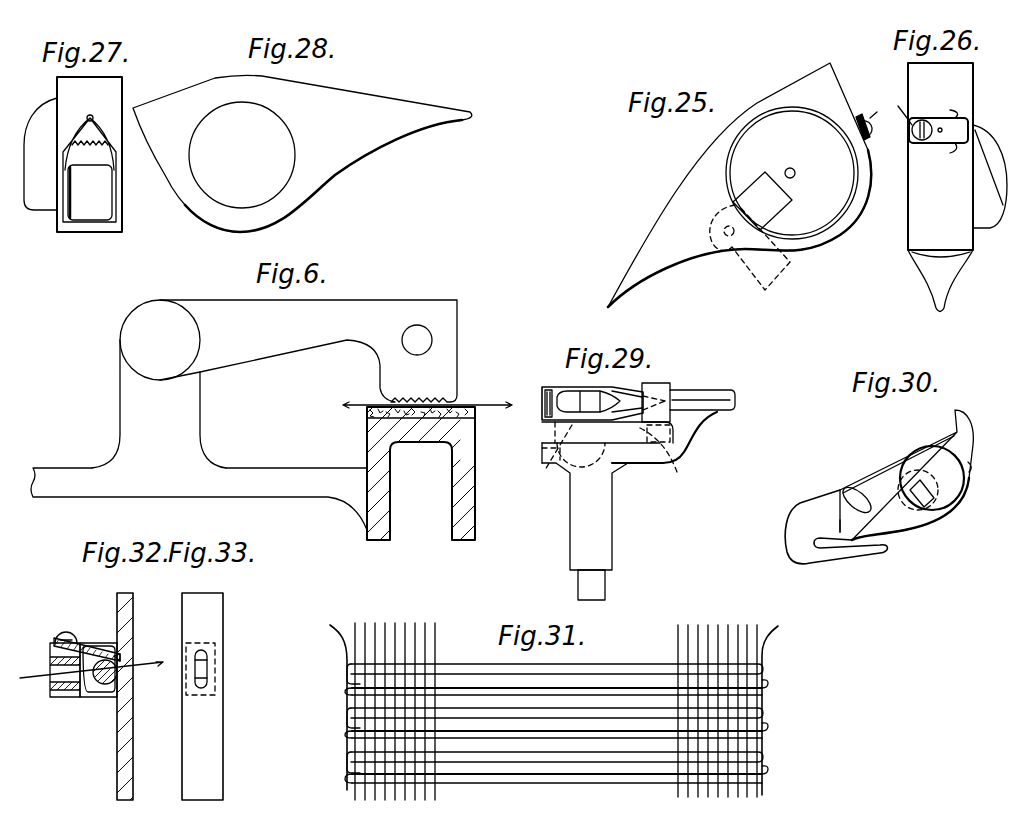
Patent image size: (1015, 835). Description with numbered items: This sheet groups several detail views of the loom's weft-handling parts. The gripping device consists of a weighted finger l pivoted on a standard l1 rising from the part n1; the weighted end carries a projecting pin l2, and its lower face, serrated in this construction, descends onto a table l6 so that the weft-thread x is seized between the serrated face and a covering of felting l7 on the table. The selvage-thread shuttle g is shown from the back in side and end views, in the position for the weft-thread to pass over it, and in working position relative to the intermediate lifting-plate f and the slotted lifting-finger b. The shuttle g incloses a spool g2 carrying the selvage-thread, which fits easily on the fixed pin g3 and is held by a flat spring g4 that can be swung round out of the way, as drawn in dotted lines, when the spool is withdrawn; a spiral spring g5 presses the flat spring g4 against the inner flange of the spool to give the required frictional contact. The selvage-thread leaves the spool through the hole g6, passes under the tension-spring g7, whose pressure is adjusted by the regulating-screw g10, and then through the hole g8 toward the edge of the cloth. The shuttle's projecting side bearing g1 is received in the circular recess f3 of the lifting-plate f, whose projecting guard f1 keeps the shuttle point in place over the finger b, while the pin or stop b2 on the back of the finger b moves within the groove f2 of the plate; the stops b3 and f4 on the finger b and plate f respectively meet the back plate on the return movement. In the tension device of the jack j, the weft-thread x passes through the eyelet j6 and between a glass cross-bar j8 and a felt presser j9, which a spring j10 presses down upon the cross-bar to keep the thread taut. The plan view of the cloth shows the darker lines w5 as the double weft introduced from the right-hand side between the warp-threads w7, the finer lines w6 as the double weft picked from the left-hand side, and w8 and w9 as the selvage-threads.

In FIG. 27, the selvage-thread shuttle g is at (89, 154).
In FIG. 28, the selvage-thread shuttle g is at (302, 153).
In FIG. 25, the selvage-thread shuttle g is at (739, 185).
In FIG. 26, the selvage-thread shuttle g is at (940, 187).
In FIG. 29, the selvage-thread shuttle g is at (590, 401).
In FIG. 30, the selvage-thread shuttle g is at (906, 475).
In FIG. 27, the projecting side bearing g1 is at (40, 154).
In FIG. 28, the projecting side bearing g1 is at (242, 155).
In FIG. 26, the projecting side bearing g1 is at (990, 176).
In FIG. 29, the projecting side bearing g1 is at (605, 443).
In FIG. 27, the spool g2 is at (74, 197).
In FIG. 25, the spool g2 is at (792, 173).
In FIG. 30, the spool g2 is at (931, 478).
In FIG. 25, the fixed pin g3 is at (795, 173).
In FIG. 25, the flat spring g4 is at (751, 231).
In FIG. 30, the flat spring g4 is at (922, 493).
In FIG. 27, the spiral spring g5 is at (89, 168).
In FIG. 26, the hole g6 is at (938, 116).
In FIG. 25, the tension-spring g7 is at (872, 135).
In FIG. 26, the tension-spring g7 is at (938, 130).
In FIG. 26, the hole g8 is at (954, 139).
In FIG. 25, the regulating-screw g10 is at (884, 106).
In FIG. 26, the regulating-screw g10 is at (893, 106).
In FIG. 6, the weighted finger l is at (288, 351).
In FIG. 6, the standard l1 is at (159, 404).
In FIG. 6, the projecting pin l2 is at (417, 340).
In FIG. 6, the table l6 is at (470, 450).
In FIG. 6, the covering of felting l7 is at (478, 418).
In FIG. 6, the base bar n1 is at (199, 499).
In FIG. 6, the weft-thread x is at (427, 397).
In FIG. 32, the weft-thread x is at (91, 671).
In FIG. 29, the lifting-finger b is at (629, 470).
In FIG. 30, the lifting-finger b is at (836, 527).
In FIG. 29, the pin or stop b2 is at (667, 459).
In FIG. 30, the pin or stop b2 is at (838, 526).
In FIG. 29, the projecting stop b3 is at (542, 455).
In FIG. 29, the intermediate lifting-plate f is at (638, 495).
In FIG. 30, the intermediate lifting-plate f is at (898, 464).
In FIG. 29, the projecting stop or guard f1 is at (656, 393).
In FIG. 30, the projecting stop or guard f1 is at (857, 500).
In FIG. 29, the groove or recess f2 is at (670, 433).
In FIG. 29, the circular opening or recess f3 is at (551, 459).
In FIG. 29, the projecting stop f4 is at (542, 430).
In FIG. 32, the plate j is at (120, 700).
In FIG. 33, the plate j is at (202, 696).
In FIG. 32, the eyelet j6 is at (60, 676).
In FIG. 32, the glass cross-bar j8 is at (102, 670).
In FIG. 32, the presser j9 is at (121, 658).
In FIG. 32, the spring j10 is at (88, 650).
In FIG. 31, the double weft (darker lines) w5 is at (556, 735).
In FIG. 31, the double weft (finer lines) w6 is at (555, 713).
In FIG. 31, the cross wire w7 is at (556, 711).
In FIG. 31, the selvage-thread w8 is at (326, 707).
In FIG. 31, the selvage-thread w9 is at (780, 708).